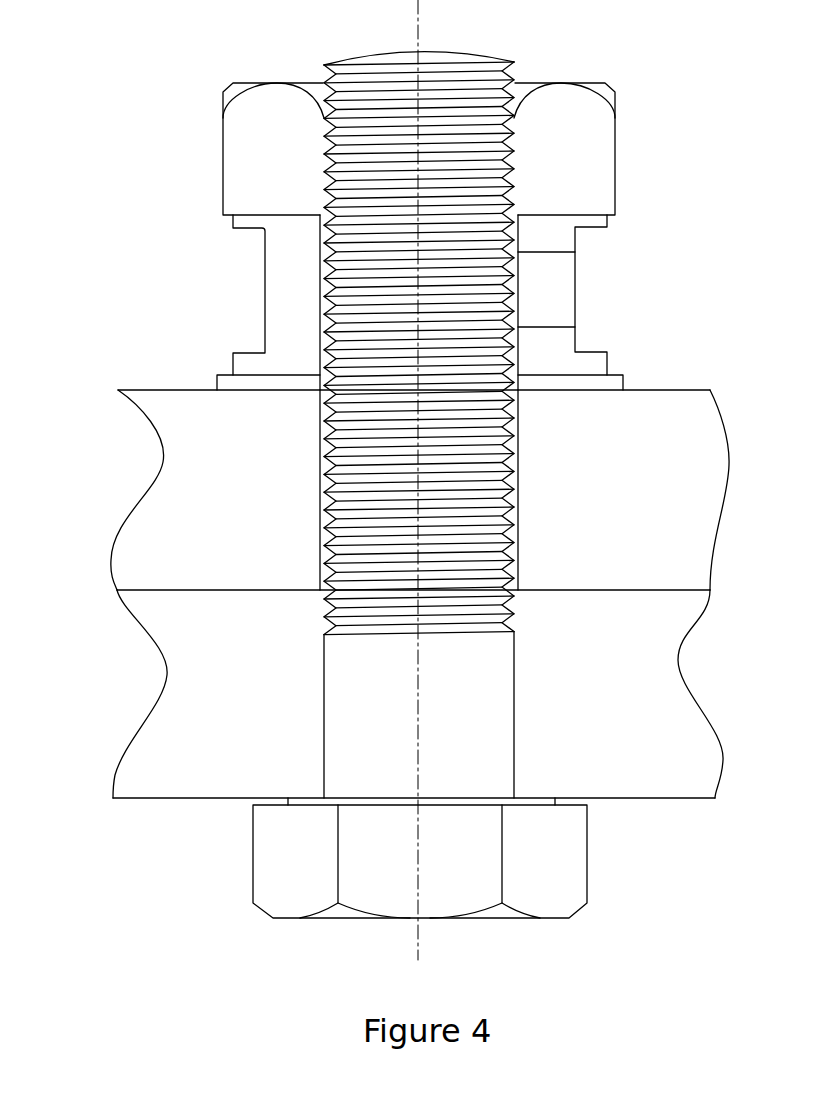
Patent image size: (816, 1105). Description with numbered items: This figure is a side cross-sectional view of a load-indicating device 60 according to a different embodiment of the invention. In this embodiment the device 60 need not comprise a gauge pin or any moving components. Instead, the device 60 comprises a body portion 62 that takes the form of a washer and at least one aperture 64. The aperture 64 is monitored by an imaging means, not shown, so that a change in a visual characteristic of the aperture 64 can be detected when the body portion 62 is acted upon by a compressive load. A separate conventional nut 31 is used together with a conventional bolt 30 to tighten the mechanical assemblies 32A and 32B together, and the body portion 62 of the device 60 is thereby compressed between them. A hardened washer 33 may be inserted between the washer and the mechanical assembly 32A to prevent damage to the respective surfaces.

The bolt 30 is at (498, 782).
The nut 31 is at (602, 112).
The mechanical assembly 32A is at (168, 450).
The mechanical assembly 32B is at (182, 672).
The hardened washer 33 is at (613, 383).
The load-indicating device 60 is at (383, 302).
The body portion 62 is at (285, 257).
The aperture 64 is at (565, 285).